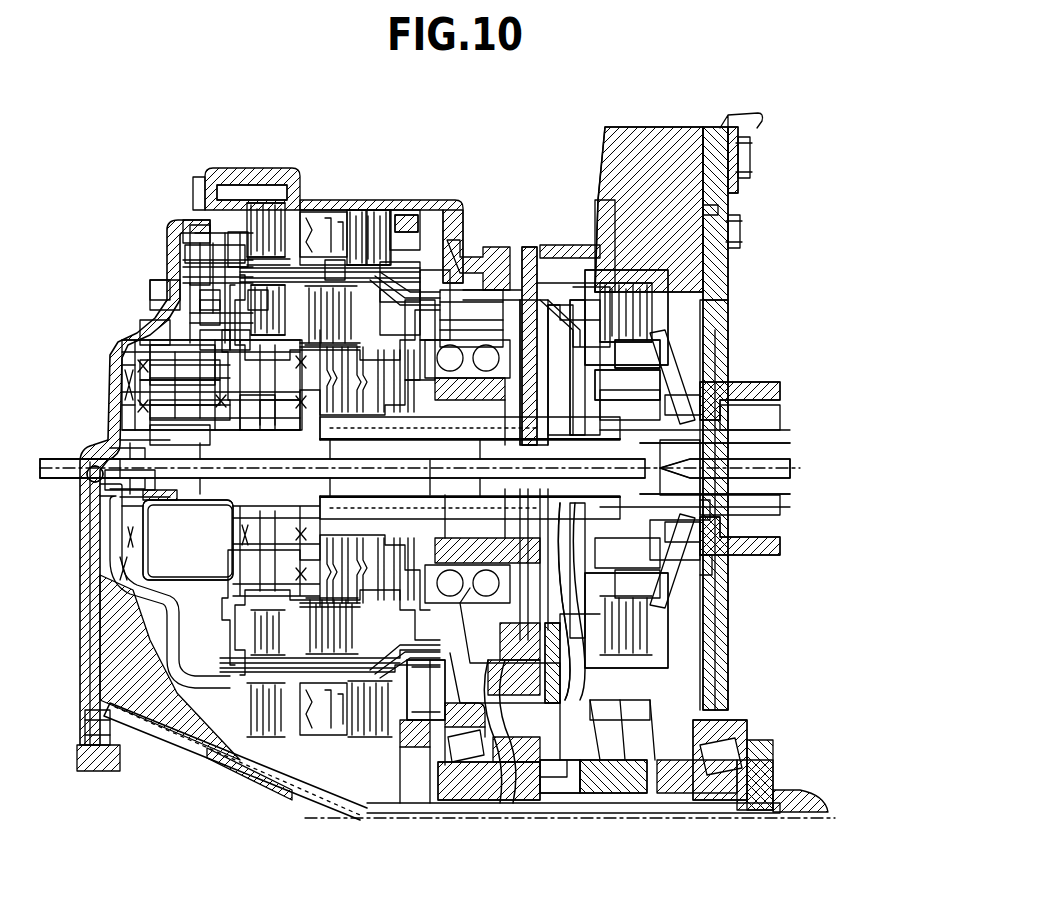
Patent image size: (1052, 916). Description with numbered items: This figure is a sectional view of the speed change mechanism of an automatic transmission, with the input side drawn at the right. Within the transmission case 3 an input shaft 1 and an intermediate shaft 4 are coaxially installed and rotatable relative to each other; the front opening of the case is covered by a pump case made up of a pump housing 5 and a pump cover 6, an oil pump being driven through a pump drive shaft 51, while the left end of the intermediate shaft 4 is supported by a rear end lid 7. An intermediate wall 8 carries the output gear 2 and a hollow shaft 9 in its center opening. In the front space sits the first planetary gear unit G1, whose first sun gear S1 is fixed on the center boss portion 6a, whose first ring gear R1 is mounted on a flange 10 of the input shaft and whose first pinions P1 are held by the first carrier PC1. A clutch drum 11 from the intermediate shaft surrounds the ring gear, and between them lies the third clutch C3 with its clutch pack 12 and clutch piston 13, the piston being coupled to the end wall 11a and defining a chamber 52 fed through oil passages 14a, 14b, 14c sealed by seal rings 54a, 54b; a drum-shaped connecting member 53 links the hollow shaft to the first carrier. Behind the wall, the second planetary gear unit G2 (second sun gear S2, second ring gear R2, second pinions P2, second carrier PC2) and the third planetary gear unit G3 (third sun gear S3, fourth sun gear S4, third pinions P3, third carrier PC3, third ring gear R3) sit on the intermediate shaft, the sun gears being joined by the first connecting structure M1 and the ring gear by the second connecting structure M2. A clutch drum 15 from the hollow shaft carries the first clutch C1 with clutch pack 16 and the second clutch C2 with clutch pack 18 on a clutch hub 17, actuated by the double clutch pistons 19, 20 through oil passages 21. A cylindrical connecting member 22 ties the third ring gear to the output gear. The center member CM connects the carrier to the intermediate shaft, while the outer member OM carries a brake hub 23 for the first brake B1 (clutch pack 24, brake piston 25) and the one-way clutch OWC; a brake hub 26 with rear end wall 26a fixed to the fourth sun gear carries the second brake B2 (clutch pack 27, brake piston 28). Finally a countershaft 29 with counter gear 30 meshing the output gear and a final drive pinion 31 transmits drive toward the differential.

The input shaft 1 is at (765, 510).
The output gear 2 is at (555, 760).
The transmission case 3 is at (243, 170).
The intermediate shaft 4 is at (98, 490).
The pump housing 5 is at (735, 225).
The pump cover 6 is at (708, 210).
The center boss portion 6a is at (735, 500).
The rear end lid 7 is at (162, 288).
The intermediate wall 8 is at (585, 740).
The hollow shaft 9 is at (610, 740).
The flange 10 is at (700, 630).
The clutch drum 11 is at (582, 300).
The end wall 11a is at (538, 340).
The clutch pack 12 is at (650, 290).
The clutch piston 13 is at (560, 330).
The oil passage 14a is at (760, 400).
The oil passage 14b is at (720, 476).
The oil passage 14c is at (760, 445).
The clutch drum 15 is at (252, 275).
The clutch pack 16 is at (272, 300).
The clutch hub 17 is at (342, 469).
The clutch pack 18 is at (378, 262).
The clutch piston 19 is at (410, 288).
The clutch piston 20 is at (400, 330).
The oil passages 21 is at (516, 300).
The cylindrical connecting member 22 is at (450, 250).
The brake hub 23 is at (355, 262).
The clutch pack 24 is at (405, 215).
The brake piston 25 is at (335, 270).
The brake hub 26 is at (157, 333).
The rear end wall 26a is at (205, 298).
The clutch pack 27 is at (260, 186).
The brake piston 28 is at (220, 300).
The countershaft 29 is at (455, 785).
The counter gear 30 is at (500, 800).
The final drive pinion 31 is at (708, 775).
The pump drive shaft 51 is at (760, 425).
The chamber 52 is at (570, 600).
The connecting member 53 is at (600, 290).
The seal rings 54a is at (700, 556).
The seal rings 54b is at (745, 490).
The first brake B1 is at (398, 240).
The second brake B2 is at (270, 222).
The first clutch C1 is at (225, 308).
The second clutch C2 is at (440, 280).
The third clutch C3 is at (660, 300).
The center member CM is at (108, 471).
The first planetary gear unit G1 is at (685, 602).
The second planetary gear unit G2 is at (318, 255).
The third planetary gear unit G3 is at (152, 345).
The first connecting structure M1 is at (243, 432).
The second connecting structure M2 is at (148, 380).
The outer member OM is at (205, 290).
The one-way clutch OWC is at (425, 300).
The first pinions P1 is at (665, 360).
The second pinions P2 is at (262, 402).
The third pinions P3 is at (157, 346).
The first carrier PC1 is at (690, 380).
The second carrier PC2 is at (152, 406).
The third carrier PC3 is at (150, 358).
The first ring gear R1 is at (665, 318).
The second ring gear R2 is at (257, 333).
The third ring gear R3 is at (222, 316).
The first sun gear S1 is at (700, 396).
The second sun gear S2 is at (278, 405).
The third sun gear S3 is at (118, 484).
The fourth sun gear S4 is at (152, 436).